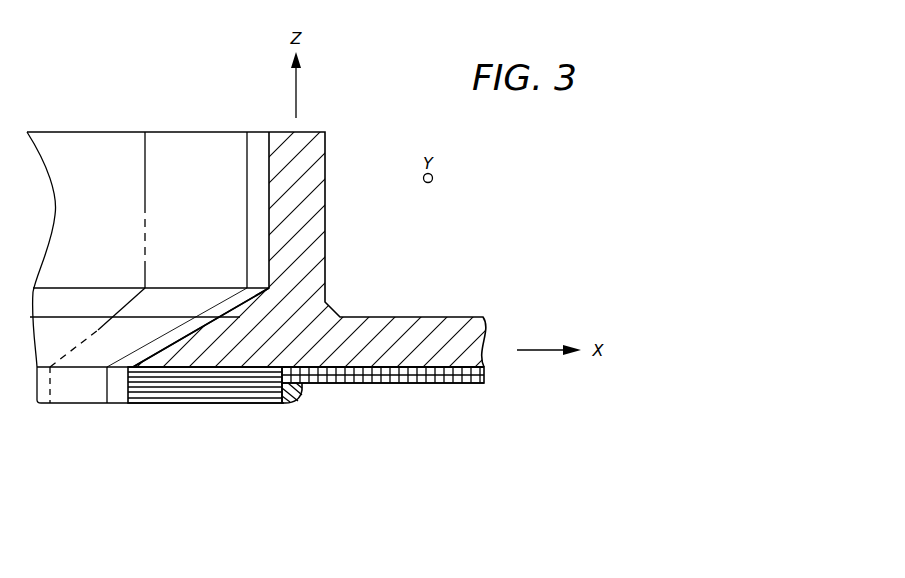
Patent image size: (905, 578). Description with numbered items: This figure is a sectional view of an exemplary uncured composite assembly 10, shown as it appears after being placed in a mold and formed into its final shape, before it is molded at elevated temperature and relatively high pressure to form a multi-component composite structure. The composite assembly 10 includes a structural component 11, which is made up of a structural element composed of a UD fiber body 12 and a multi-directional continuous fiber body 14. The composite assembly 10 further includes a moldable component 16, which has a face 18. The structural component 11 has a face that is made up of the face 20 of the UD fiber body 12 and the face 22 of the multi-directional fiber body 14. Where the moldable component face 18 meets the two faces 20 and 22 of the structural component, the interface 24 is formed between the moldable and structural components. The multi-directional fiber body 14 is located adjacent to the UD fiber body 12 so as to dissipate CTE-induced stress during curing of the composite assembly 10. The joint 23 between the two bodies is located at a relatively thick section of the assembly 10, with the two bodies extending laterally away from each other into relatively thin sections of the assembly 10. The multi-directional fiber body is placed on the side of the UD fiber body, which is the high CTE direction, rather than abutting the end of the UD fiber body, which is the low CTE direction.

The composite assembly 10 is at (128, 111).
The structural component 11 is at (342, 421).
The UD fiber body 12 is at (195, 383).
The multi-directional continuous fiber body 14 is at (422, 383).
The moldable component 16 is at (308, 187).
The face 18 is at (462, 383).
The face 20 is at (222, 367).
The face 22 is at (348, 365).
The joint 23 is at (300, 395).
The interface 24 is at (173, 367).